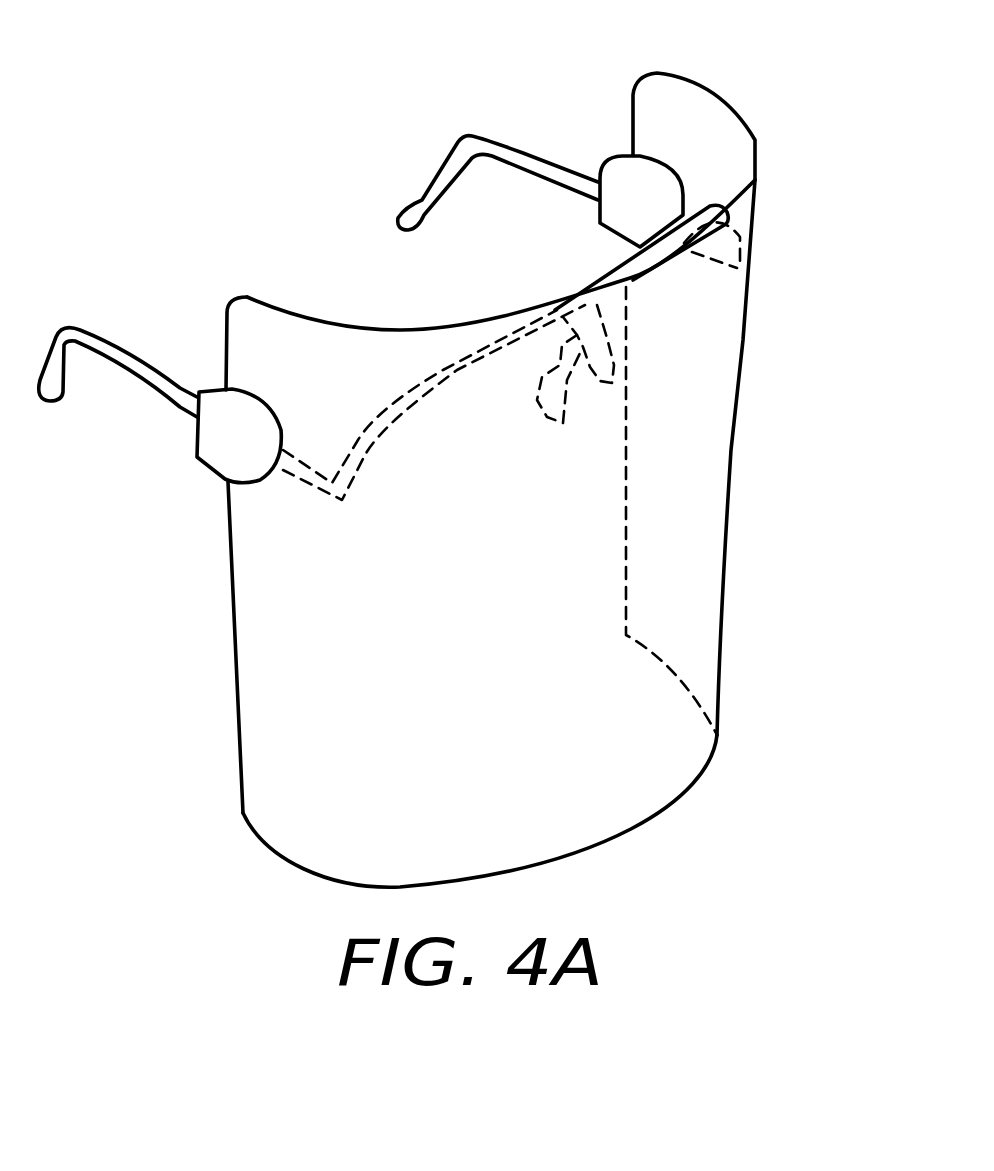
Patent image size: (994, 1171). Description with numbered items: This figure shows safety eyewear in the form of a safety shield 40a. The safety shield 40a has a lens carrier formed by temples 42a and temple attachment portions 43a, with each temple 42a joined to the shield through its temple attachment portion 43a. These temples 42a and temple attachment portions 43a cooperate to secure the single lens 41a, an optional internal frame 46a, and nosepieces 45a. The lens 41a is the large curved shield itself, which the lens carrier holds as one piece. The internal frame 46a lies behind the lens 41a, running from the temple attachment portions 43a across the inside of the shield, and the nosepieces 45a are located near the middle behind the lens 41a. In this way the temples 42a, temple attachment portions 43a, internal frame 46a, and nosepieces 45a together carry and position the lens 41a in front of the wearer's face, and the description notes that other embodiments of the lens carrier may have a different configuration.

The safety shield 40a is at (188, 60).
The lens 41a is at (288, 733).
The temples 42a is at (110, 337).
The temple attachment portions 43a is at (235, 446).
The nosepieces 45a is at (597, 362).
The internal frame 46a is at (372, 423).